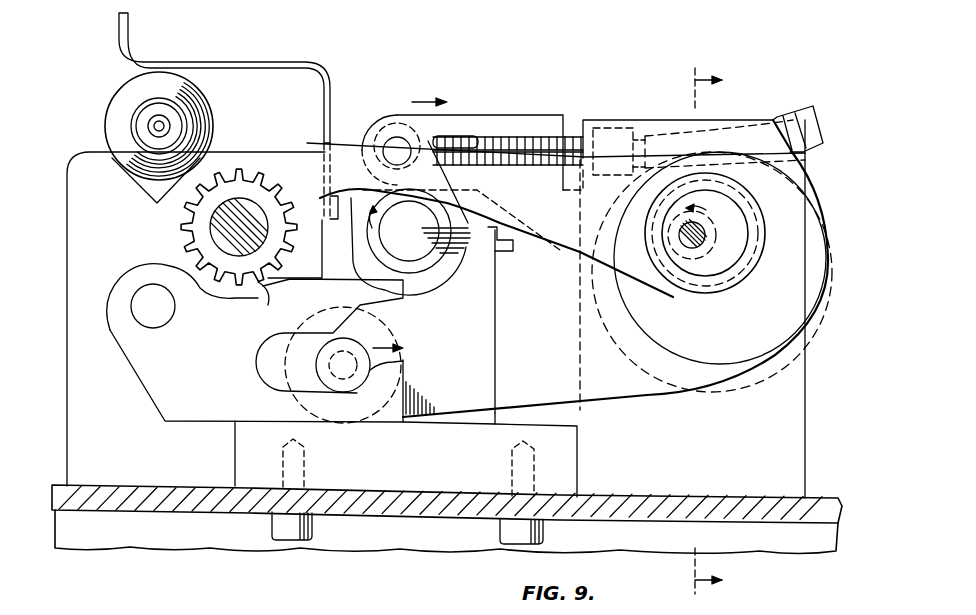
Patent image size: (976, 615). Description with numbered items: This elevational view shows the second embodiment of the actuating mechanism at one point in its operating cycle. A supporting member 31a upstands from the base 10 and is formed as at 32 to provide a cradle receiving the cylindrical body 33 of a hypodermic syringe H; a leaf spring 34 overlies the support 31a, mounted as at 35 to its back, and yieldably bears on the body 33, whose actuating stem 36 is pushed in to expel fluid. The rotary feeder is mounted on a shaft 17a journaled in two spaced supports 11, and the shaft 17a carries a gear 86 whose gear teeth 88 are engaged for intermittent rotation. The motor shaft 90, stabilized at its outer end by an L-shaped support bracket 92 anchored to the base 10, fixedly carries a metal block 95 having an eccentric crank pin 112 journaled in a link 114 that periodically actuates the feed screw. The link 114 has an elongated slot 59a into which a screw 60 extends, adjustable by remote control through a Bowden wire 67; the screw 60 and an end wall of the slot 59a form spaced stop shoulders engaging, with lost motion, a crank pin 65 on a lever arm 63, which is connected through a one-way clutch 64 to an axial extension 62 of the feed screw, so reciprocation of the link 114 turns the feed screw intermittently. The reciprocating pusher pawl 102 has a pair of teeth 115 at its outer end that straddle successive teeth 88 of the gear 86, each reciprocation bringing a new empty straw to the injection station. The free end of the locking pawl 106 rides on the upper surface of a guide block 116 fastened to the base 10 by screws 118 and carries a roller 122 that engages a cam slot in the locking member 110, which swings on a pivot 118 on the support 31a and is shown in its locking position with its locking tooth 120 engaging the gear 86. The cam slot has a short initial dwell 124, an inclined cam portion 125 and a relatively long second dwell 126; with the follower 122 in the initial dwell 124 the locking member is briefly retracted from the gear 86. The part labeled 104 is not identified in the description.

The base 10 is at (768, 495).
The spaced supports 11 is at (729, 332).
The shaft 17a is at (222, 222).
The supporting member 31a is at (86, 385).
The cradle formation 32 is at (148, 189).
The cylindrical body 33 is at (118, 141).
The leaf spring 34 is at (257, 64).
The mounting 35 is at (302, 258).
The actuating stem 36 is at (150, 123).
The elongated opening or slot 59a is at (428, 141).
The adjustable screw 60 is at (575, 140).
The axial extension 62 is at (394, 242).
The lever arm 63 is at (447, 262).
The one-way clutch 64 is at (418, 268).
The crank pin 65 is at (396, 140).
The Bowden wire 67 is at (800, 114).
The gear 86 is at (200, 243).
The gear teeth 88 is at (238, 160).
The motor shaft 90 is at (708, 226).
The L-shaped support bracket 92 is at (786, 402).
The metal block 95 is at (730, 252).
The reciprocating pusher pawl 102 is at (549, 241).
The cam wheel 104 is at (753, 227).
The locking pawl 106 is at (643, 390).
The locking member 110 is at (342, 380).
The eccentric crank pin 112 is at (668, 272).
The link 114 is at (502, 126).
The pair of teeth 115 is at (314, 135).
The guide block 116 is at (431, 450).
The screws 118 is at (140, 307).
The locking tooth 120 is at (246, 307).
The roller 122 is at (346, 392).
The initial dwell 124 is at (390, 308).
The inclined cam portion 125 is at (380, 366).
The second dwell 126 is at (277, 385).
The hypodermic syringe H is at (117, 87).